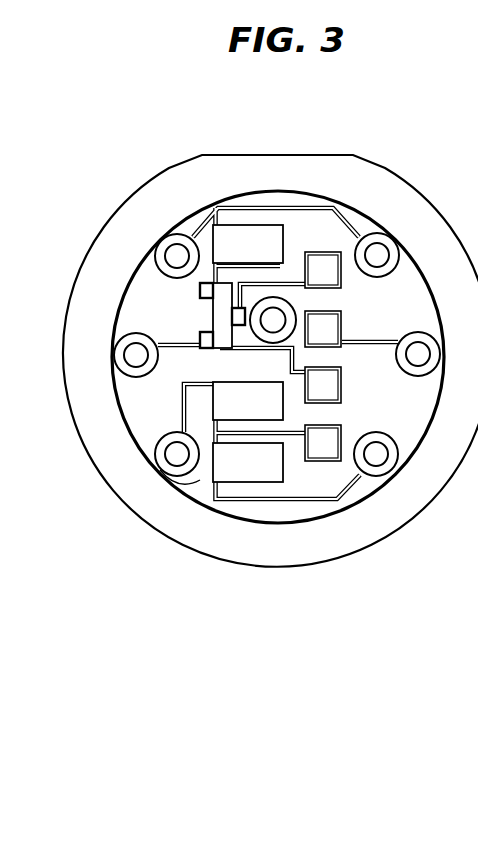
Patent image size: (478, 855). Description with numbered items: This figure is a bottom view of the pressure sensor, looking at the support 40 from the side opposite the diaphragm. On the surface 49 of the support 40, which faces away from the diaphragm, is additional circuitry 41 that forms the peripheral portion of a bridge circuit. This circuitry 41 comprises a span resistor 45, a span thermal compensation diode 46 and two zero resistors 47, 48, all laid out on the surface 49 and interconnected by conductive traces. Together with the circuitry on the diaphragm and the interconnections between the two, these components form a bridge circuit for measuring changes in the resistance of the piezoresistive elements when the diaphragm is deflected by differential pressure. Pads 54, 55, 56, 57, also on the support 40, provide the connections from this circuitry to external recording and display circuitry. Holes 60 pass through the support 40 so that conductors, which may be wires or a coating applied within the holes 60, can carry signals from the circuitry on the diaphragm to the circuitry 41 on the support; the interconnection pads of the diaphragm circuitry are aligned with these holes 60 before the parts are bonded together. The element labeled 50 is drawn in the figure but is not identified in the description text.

The support 40 is at (367, 173).
The additional circuitry 41 is at (152, 399).
The span resistor 45 is at (284, 245).
The span thermal compensation diode 46 is at (212, 320).
The zero resistor 47 is at (219, 383).
The zero resistor 48 is at (284, 464).
The surface 49 is at (198, 466).
The mounting hole 50 is at (383, 234).
The pad 54 is at (325, 438).
The pad 55 is at (324, 385).
The pad 56 is at (324, 330).
The pad 57 is at (318, 273).
The holes 60 is at (382, 258).